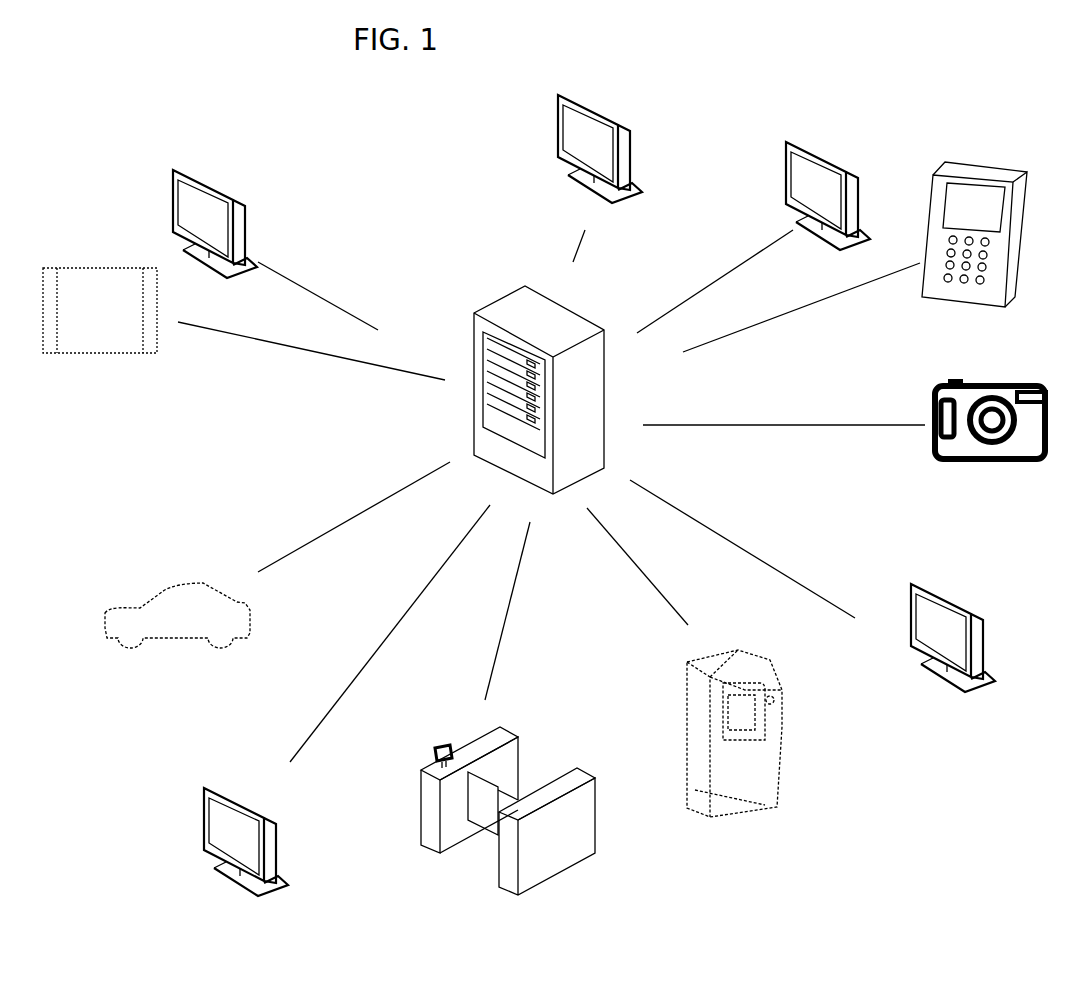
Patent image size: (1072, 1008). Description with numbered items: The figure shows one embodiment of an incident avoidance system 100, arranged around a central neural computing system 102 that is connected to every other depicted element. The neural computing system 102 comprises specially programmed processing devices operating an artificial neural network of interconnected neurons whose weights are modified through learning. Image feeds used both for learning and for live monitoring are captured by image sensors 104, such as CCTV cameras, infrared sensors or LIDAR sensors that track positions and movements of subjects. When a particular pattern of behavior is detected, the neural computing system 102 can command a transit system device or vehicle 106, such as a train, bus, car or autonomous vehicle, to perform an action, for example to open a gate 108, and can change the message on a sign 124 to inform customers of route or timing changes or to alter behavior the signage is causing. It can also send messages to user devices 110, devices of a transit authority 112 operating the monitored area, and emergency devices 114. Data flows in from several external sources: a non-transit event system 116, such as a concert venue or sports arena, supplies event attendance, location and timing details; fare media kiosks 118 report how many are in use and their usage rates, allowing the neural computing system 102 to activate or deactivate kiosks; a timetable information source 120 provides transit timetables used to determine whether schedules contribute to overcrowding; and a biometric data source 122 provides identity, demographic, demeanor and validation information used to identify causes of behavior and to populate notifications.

The incident avoidance system 100 is at (302, 120).
The neural computing system 102 is at (473, 402).
The image sensor 104 is at (934, 384).
The vehicle 106 is at (130, 560).
The gate 108 is at (595, 843).
The user device 110 is at (920, 167).
The device of a transit authority 112 is at (176, 168).
The emergency device 114 is at (785, 140).
The non-transit event system 116 is at (912, 582).
The fare media kiosk 118 is at (780, 765).
The timetable information source 120 is at (557, 92).
The biometric data source 122 is at (203, 790).
The sign 124 is at (83, 270).